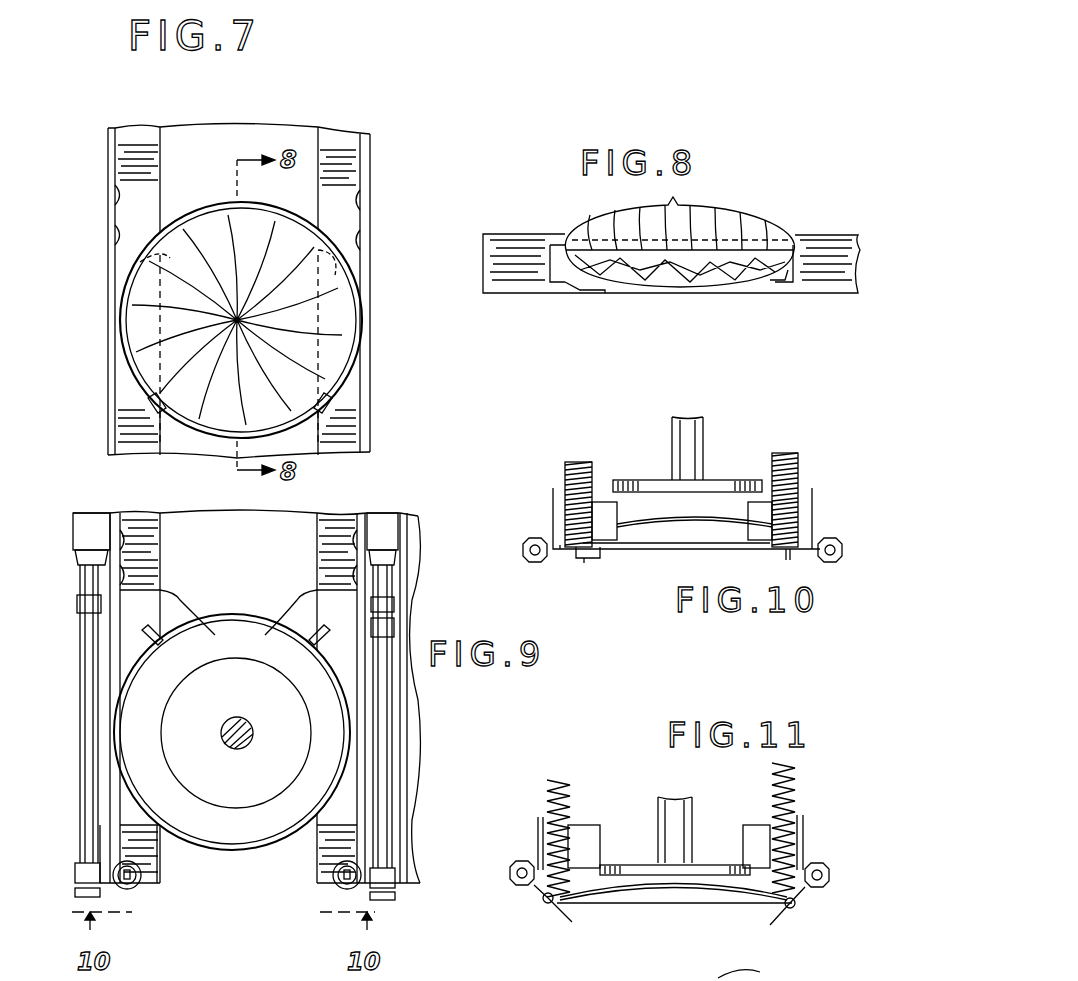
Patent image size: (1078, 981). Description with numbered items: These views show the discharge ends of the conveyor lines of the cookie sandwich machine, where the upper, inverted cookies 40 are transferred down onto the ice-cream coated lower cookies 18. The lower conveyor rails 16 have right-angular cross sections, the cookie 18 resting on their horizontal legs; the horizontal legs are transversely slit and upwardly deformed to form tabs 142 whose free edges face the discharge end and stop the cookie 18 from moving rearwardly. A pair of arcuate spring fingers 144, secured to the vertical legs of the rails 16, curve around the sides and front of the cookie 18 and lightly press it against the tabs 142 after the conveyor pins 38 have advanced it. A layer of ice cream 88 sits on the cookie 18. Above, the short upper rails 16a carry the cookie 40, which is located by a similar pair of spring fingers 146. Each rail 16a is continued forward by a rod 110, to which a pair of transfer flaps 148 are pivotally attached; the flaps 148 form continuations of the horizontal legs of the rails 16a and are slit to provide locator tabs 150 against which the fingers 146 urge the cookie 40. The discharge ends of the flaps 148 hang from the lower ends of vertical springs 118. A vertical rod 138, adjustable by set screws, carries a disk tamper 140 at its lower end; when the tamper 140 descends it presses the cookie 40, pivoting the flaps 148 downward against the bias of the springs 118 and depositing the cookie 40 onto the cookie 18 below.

In FIG. 7, the conveyor rail 16 is at (140, 135).
In FIG. 8, the conveyor rail 16 is at (822, 243).
In FIG. 10, the conveyor rail 16a is at (553, 490).
In FIG. 9, the conveyor rail 16a is at (143, 525).
In FIG. 11, the conveyor rail 16a is at (538, 818).
In FIG. 7, the cookie 18 is at (208, 205).
In FIG. 8, the cookie 18 is at (735, 285).
In FIG. 11, the pin 38 is at (746, 968).
In FIG. 10, the cookie 40 is at (698, 543).
In FIG. 9, the cookie 40 is at (250, 855).
In FIG. 11, the cookie 40 is at (665, 903).
In FIG. 7, the ice cream 88 is at (265, 222).
In FIG. 8, the ice cream 88 is at (735, 215).
In FIG. 10, the rod 110 is at (535, 562).
In FIG. 9, the rod 110 is at (80, 790).
In FIG. 11, the rod 110 is at (510, 879).
In FIG. 10, the spring 118 is at (565, 468).
In FIG. 9, the spring 118 is at (135, 888).
In FIG. 11, the spring 118 is at (565, 785).
In FIG. 10, the vertical rod 138 is at (705, 430).
In FIG. 9, the vertical rod 138 is at (246, 722).
In FIG. 11, the vertical rod 138 is at (692, 810).
In FIG. 10, the tamper 140 is at (722, 480).
In FIG. 9, the tamper 140 is at (232, 660).
In FIG. 11, the tamper 140 is at (702, 862).
In FIG. 7, the tab 142 is at (330, 283).
In FIG. 8, the tab 142 is at (600, 300).
In FIG. 7, the spring finger 144 is at (150, 396).
In FIG. 8, the spring finger 144 is at (788, 282).
In FIG. 10, the spring finger 146 is at (608, 507).
In FIG. 9, the spring finger 146 is at (158, 606).
In FIG. 11, the spring finger 146 is at (603, 830).
In FIG. 10, the transfer flap 148 is at (594, 563).
In FIG. 9, the transfer flap 148 is at (157, 871).
In FIG. 11, the transfer flap 148 is at (555, 920).
In FIG. 9, the locator tab 150 is at (160, 632).